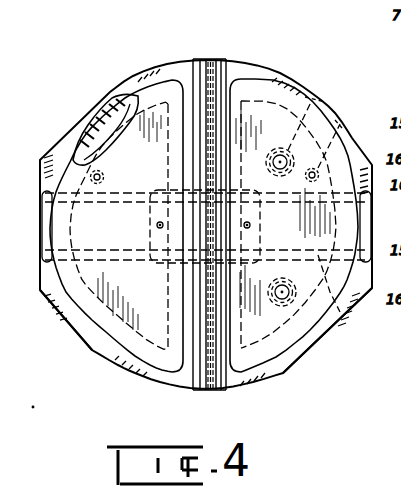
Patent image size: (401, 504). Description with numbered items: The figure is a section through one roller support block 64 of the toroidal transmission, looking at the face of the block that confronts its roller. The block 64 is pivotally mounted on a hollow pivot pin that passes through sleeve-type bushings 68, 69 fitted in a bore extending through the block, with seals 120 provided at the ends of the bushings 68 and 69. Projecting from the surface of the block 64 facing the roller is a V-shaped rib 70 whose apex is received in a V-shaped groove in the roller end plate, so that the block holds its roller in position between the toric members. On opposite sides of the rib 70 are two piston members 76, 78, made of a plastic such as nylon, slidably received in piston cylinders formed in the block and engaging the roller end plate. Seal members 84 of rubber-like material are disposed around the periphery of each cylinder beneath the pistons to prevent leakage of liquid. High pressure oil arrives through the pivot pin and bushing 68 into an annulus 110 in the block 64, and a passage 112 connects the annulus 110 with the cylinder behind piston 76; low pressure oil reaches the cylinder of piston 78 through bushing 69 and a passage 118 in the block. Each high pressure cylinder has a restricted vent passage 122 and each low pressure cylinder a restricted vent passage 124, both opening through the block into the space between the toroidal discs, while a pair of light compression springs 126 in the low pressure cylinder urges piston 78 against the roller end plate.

The support block 64 is at (293, 358).
The bushing 68 is at (100, 262).
The bushing 69 is at (322, 312).
The V-shaped rib 70 is at (220, 74).
The piston member 76 is at (154, 168).
The piston member 78 is at (277, 141).
The seal member 84 is at (107, 103).
The annulus 110 is at (152, 228).
The passage 112 is at (156, 223).
The passage 118 is at (251, 225).
The seal 120 is at (45, 223).
The restricted vent passage 122 is at (89, 176).
The restricted vent passage 124 is at (343, 118).
The compression spring 126 is at (309, 100).